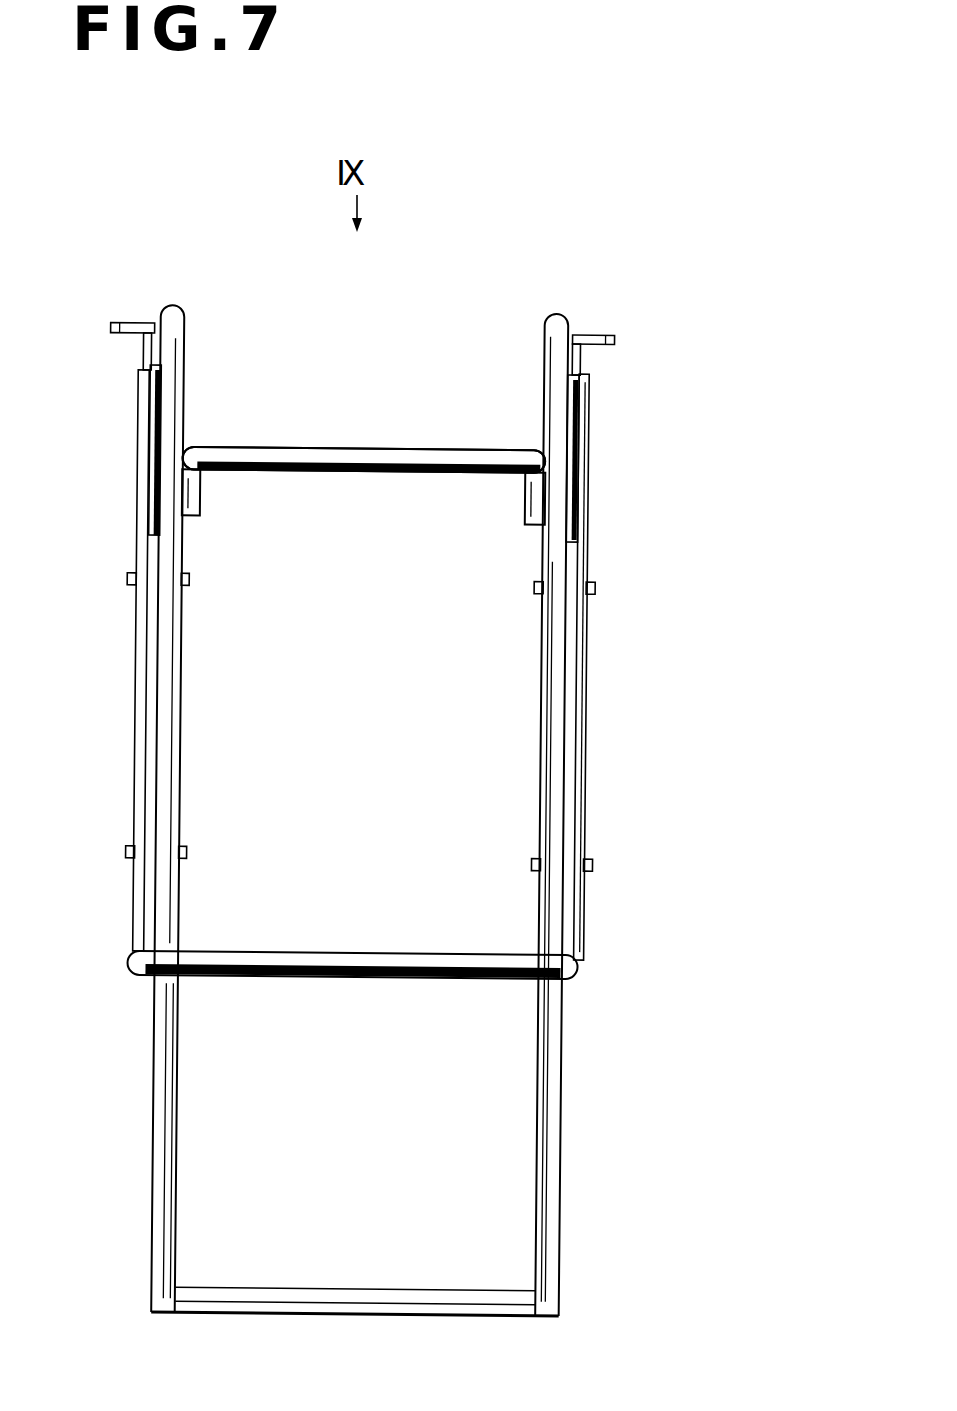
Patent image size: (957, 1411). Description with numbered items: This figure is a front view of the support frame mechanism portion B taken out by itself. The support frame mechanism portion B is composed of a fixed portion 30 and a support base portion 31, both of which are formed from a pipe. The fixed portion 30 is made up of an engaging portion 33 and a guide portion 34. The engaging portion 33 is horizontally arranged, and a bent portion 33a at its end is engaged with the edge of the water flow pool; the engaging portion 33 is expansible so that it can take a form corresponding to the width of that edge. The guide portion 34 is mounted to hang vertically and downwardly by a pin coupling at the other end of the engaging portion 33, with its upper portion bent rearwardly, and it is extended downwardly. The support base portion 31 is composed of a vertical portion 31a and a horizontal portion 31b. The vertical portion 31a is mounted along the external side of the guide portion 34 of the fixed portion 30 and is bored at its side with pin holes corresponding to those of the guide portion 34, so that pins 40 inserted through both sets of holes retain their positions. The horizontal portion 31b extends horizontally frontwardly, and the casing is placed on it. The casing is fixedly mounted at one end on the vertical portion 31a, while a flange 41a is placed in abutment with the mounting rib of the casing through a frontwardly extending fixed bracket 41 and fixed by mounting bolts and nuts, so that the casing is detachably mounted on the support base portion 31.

The support frame mechanism portion B is at (724, 350).
The fixed portion 30 is at (465, 590).
The support base portion 31 is at (592, 760).
The vertical portion 31a is at (583, 665).
The horizontal portion 31b is at (390, 950).
The engaging portion 33 is at (355, 475).
The bent portion 33a is at (200, 493).
The guide portion 34 is at (545, 595).
The pins 40 is at (128, 580).
The fixed bracket 41 is at (583, 440).
The flange 41a is at (123, 323).